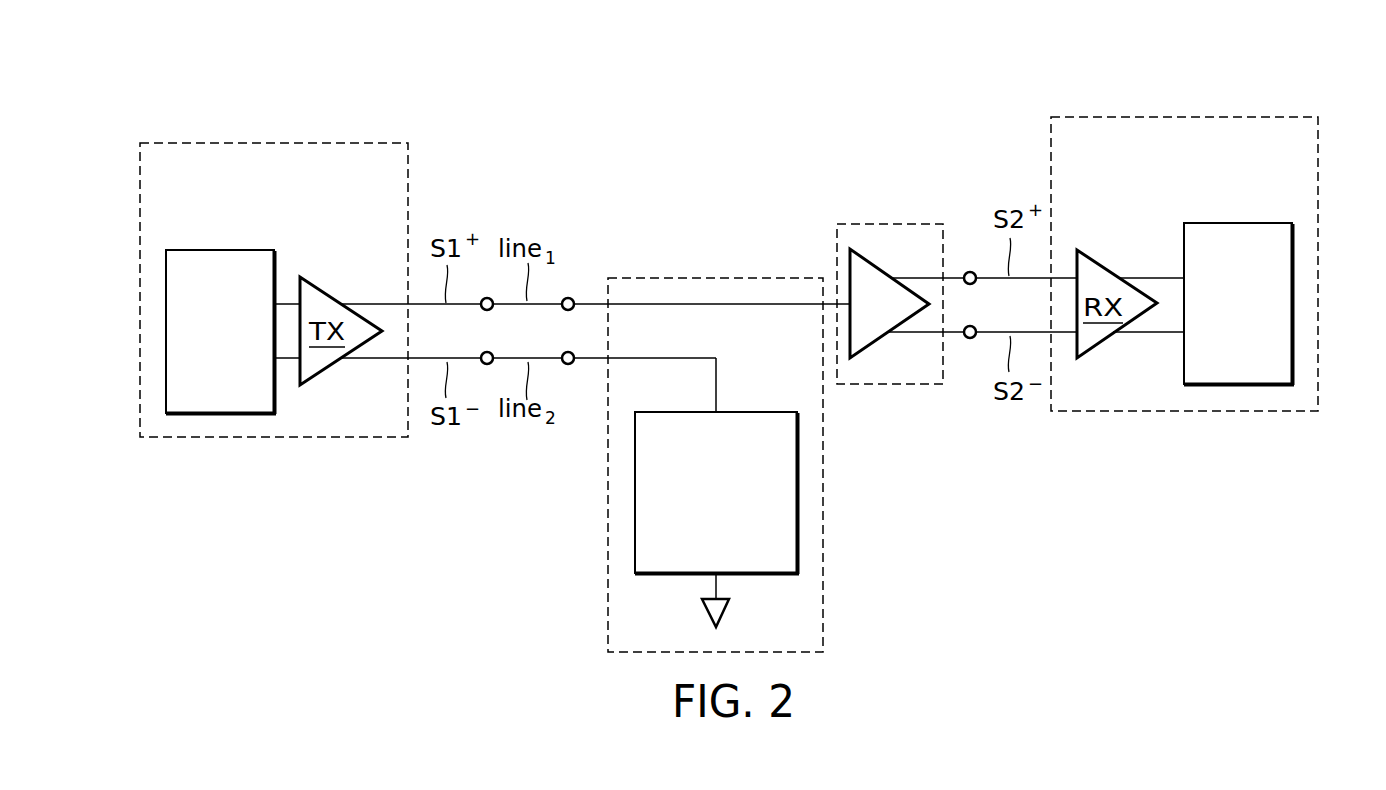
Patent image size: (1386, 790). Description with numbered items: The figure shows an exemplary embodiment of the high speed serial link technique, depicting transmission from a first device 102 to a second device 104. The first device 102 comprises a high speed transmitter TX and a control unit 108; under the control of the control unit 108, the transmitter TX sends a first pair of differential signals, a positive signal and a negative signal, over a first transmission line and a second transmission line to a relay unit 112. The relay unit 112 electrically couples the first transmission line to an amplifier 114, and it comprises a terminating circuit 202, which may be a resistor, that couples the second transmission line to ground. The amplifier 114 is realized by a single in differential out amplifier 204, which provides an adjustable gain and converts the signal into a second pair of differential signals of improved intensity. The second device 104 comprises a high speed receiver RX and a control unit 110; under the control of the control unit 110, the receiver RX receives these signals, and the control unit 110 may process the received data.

The first device 102 is at (273, 143).
The second device 104 is at (1184, 117).
The control unit 108 is at (166, 330).
The control unit 110 is at (1294, 305).
The relay unit 112 is at (662, 278).
The amplifier 114 is at (889, 224).
The terminating circuit 202 is at (799, 490).
The single in differential out amplifier 204 is at (897, 317).